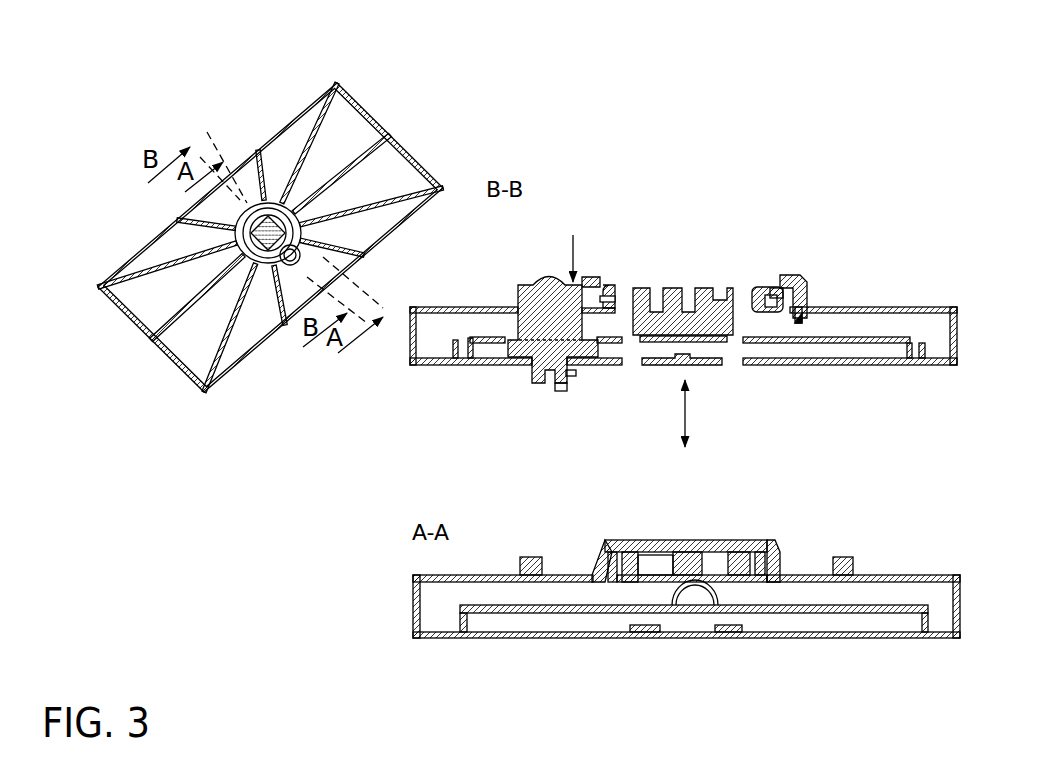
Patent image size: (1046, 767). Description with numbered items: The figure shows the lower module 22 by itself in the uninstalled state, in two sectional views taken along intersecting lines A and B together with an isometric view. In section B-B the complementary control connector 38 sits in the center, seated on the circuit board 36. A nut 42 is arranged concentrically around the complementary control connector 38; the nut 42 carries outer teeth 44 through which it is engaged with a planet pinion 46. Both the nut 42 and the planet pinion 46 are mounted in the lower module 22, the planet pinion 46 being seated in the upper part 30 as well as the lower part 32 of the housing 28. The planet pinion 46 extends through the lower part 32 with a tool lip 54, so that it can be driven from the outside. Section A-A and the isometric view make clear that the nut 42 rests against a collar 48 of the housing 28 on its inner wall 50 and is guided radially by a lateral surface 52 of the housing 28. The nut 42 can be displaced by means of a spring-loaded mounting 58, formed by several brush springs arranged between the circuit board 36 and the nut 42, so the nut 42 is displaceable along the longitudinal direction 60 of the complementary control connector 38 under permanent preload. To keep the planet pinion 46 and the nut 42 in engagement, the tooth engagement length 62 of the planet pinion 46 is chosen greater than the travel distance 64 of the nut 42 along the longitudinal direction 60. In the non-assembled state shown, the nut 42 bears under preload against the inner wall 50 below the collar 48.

The lower module 22 is at (412, 108).
The housing 28 is at (200, 320).
The upper part 30 is at (473, 308).
The lower part 32 is at (445, 362).
The circuit board 36 is at (813, 339).
The complementary control connector 38 is at (672, 310).
The nut 42 is at (612, 305).
The outer teeth 44 is at (598, 298).
The planet pinion 46 is at (280, 290).
The collar 48 is at (222, 233).
The inner wall 50 is at (800, 322).
The lateral surface 52 is at (773, 567).
The tool lip 54 is at (550, 385).
The spring-loaded mounting 58 is at (667, 592).
The longitudinal direction 60 is at (690, 412).
The tooth engagement length 62 is at (577, 375).
The travel distance 64 is at (562, 393).